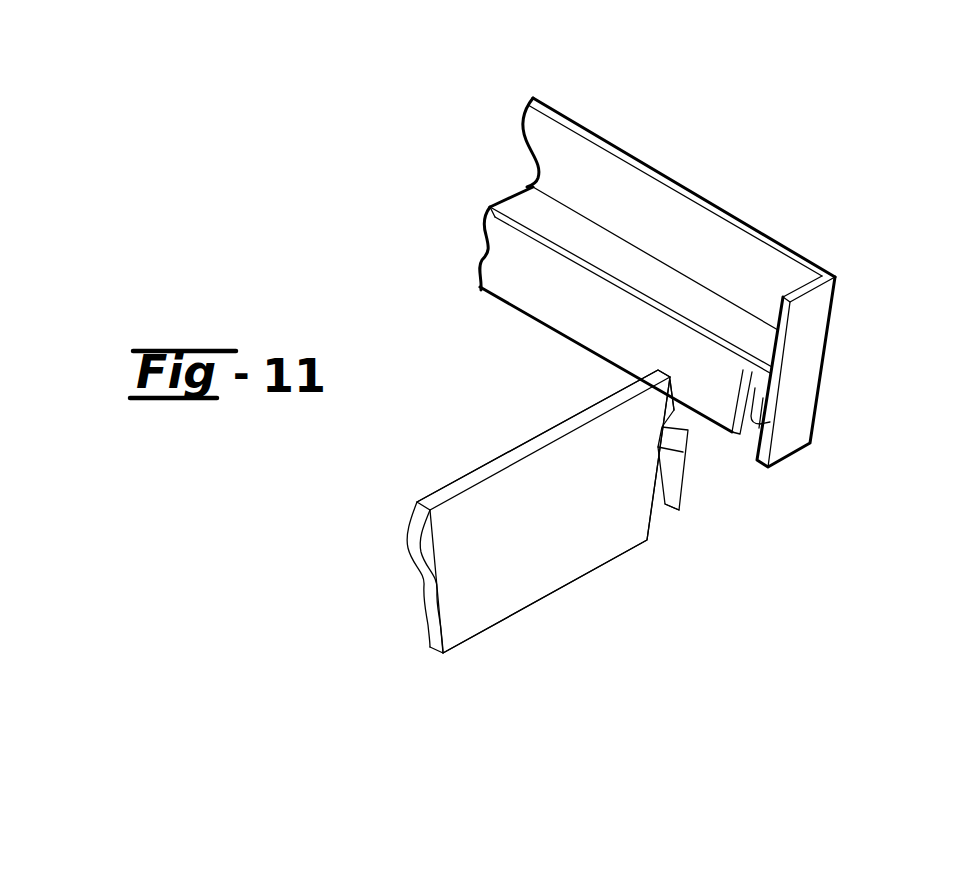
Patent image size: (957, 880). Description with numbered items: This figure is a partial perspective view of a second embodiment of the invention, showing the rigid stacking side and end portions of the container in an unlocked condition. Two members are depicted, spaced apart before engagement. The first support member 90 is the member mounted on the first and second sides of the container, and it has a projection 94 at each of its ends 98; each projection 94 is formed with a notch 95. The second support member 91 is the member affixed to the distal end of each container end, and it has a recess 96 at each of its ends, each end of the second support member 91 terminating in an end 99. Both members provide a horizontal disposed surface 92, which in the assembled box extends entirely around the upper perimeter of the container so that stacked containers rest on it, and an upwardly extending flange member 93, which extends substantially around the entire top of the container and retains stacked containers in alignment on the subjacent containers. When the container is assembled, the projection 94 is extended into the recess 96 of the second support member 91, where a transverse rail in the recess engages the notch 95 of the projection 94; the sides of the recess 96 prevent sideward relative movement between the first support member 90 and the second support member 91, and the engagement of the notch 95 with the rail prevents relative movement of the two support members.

The first support member 90 is at (533, 622).
The second support member 91 is at (452, 275).
The horizontal disposed surface 92 is at (535, 208).
The upwardly extending flange member 93 is at (711, 248).
The projection 94 is at (662, 503).
The notch 95 is at (668, 446).
The recess 96 is at (748, 430).
The end 98 is at (671, 400).
The end 99 is at (781, 347).